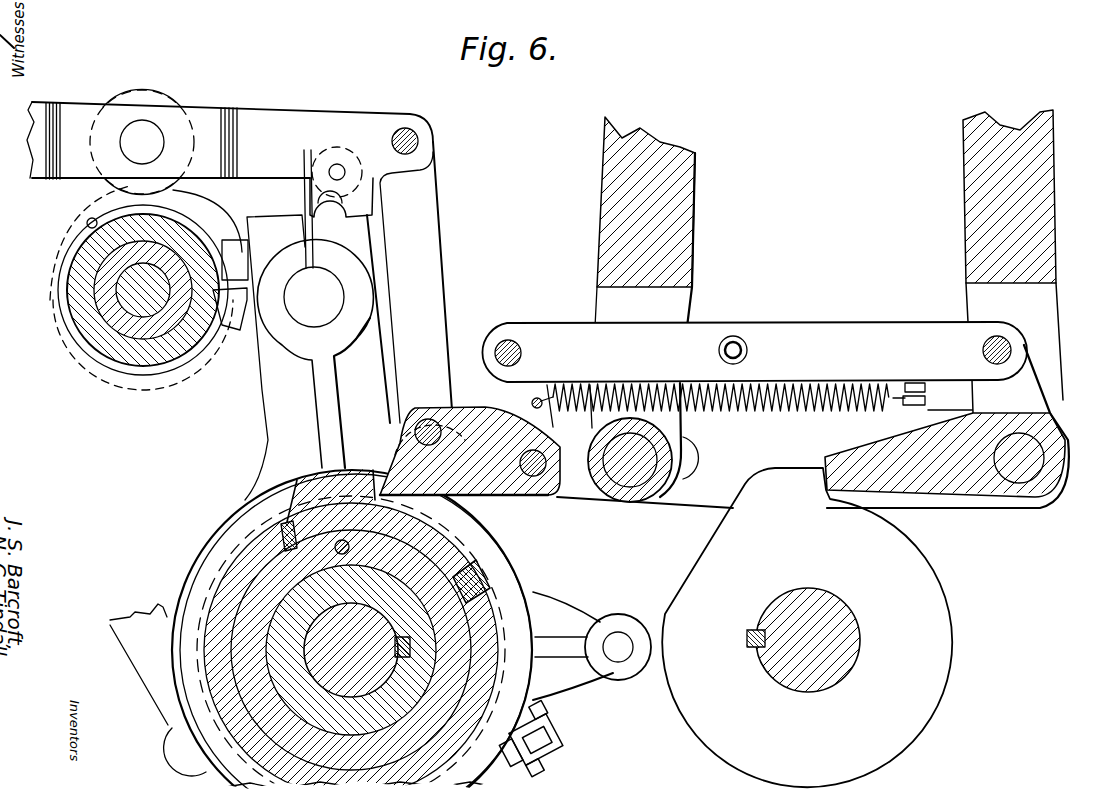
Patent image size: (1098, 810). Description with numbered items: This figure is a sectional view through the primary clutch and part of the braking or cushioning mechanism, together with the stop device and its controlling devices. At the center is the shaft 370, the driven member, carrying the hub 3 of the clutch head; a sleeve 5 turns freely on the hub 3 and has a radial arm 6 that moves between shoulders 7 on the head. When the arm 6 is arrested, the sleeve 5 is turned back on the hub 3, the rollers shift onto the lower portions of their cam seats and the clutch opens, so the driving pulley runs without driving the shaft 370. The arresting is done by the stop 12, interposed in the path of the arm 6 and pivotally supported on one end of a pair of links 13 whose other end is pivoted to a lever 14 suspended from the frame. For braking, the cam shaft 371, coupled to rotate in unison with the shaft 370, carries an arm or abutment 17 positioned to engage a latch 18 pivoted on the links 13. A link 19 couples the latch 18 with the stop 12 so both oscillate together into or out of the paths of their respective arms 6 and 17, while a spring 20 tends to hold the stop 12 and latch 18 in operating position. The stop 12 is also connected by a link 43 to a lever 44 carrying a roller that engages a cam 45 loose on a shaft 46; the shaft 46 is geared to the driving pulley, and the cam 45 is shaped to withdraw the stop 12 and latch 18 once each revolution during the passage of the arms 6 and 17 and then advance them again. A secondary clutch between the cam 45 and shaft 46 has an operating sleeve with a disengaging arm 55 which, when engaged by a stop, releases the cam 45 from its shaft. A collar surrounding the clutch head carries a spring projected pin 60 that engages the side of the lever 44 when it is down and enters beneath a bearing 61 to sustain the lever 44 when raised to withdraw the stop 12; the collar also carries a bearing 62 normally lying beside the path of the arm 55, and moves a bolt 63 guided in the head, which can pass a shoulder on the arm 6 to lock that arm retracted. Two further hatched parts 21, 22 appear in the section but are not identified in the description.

The hub 3 is at (413, 615).
The sleeve 5 is at (260, 597).
The radial arm 6 is at (320, 482).
The shoulders 7 is at (300, 537).
The stop 12 is at (497, 470).
The links 13 is at (653, 445).
The lever 14 is at (982, 227).
The arm or abutment 17 is at (807, 627).
The latch 18 is at (873, 453).
The link 19 is at (754, 352).
The spring 20 is at (753, 393).
The post 21 is at (683, 205).
The roller 22 is at (627, 500).
The link 43 is at (409, 275).
The lever 44 is at (230, 153).
The cam 45 is at (233, 217).
The shaft 46 is at (133, 290).
The disengaging arm 55 is at (232, 313).
The spring projected pin 60 is at (338, 170).
The bearing 61 is at (328, 212).
The bearing 62 is at (233, 253).
The bolt 63 is at (487, 578).
The shaft 370 is at (307, 645).
The cam shaft 371 is at (847, 640).